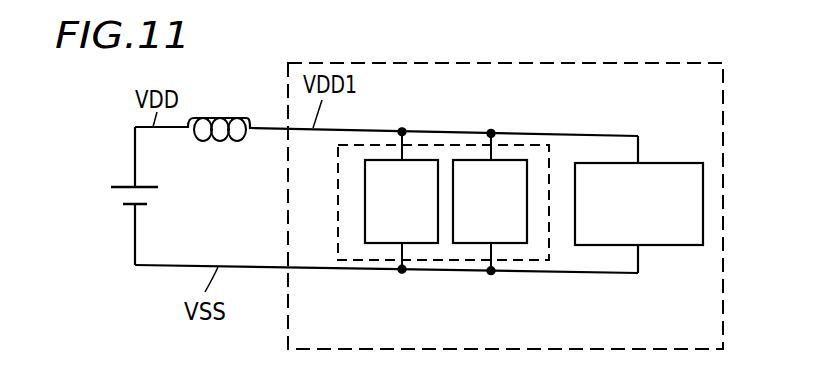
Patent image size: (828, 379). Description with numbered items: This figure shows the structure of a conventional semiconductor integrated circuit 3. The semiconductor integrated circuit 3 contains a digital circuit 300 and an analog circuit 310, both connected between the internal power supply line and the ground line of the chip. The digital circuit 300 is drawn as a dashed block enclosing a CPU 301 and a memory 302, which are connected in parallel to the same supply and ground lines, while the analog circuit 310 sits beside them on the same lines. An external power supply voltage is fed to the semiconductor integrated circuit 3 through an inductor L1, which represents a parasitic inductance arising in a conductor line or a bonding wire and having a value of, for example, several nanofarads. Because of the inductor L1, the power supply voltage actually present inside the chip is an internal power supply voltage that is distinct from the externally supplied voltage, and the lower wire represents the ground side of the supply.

The semiconductor integrated circuit 3 is at (283, 326).
The digital circuit 300 is at (357, 262).
The CPU 301 is at (401, 200).
The memory 302 is at (490, 201).
The analog circuit 310 is at (639, 204).
The inductor L1 is at (220, 149).